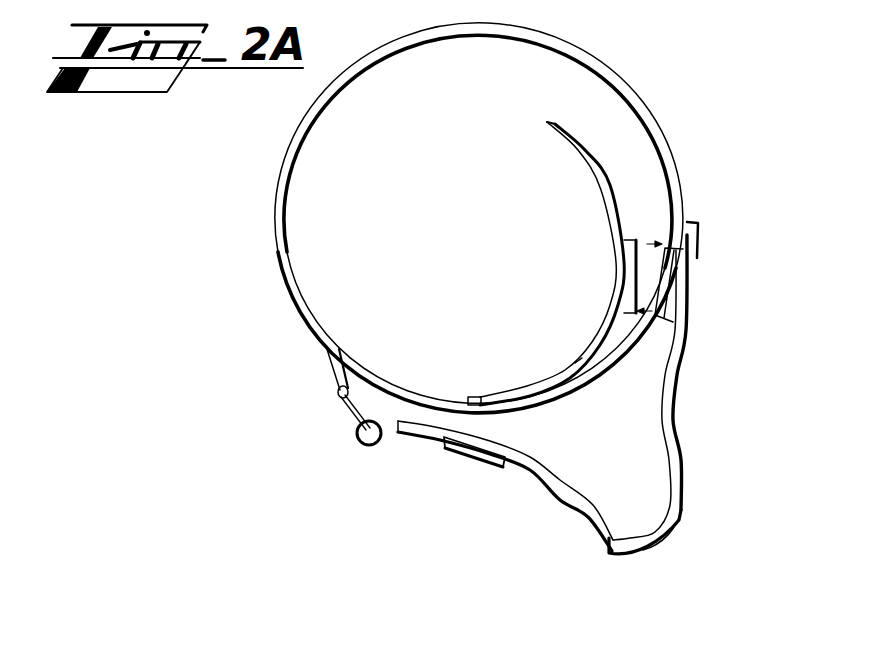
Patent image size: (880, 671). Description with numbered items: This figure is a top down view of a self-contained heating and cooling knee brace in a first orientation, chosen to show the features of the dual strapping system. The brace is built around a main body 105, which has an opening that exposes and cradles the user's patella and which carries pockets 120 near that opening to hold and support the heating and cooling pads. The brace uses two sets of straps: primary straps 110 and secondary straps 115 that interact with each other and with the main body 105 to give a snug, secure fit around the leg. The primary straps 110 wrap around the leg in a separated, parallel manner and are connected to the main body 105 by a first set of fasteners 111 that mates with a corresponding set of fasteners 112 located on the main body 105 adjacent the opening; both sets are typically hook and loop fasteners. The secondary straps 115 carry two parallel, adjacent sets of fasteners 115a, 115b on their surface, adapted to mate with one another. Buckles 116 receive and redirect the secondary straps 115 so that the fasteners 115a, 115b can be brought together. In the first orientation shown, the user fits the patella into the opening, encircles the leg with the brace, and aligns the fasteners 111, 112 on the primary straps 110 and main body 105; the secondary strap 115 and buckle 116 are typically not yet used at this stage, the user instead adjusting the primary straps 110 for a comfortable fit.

The main body 105 is at (604, 338).
The primary straps 110 is at (640, 128).
The first set of fasteners 111 is at (673, 275).
The set of fasteners 112 is at (628, 268).
The secondary straps 115 is at (680, 375).
The set of fasteners 115a is at (652, 549).
The set of fasteners 115b is at (466, 465).
The buckles 116 is at (355, 423).
The pockets 120 is at (478, 398).